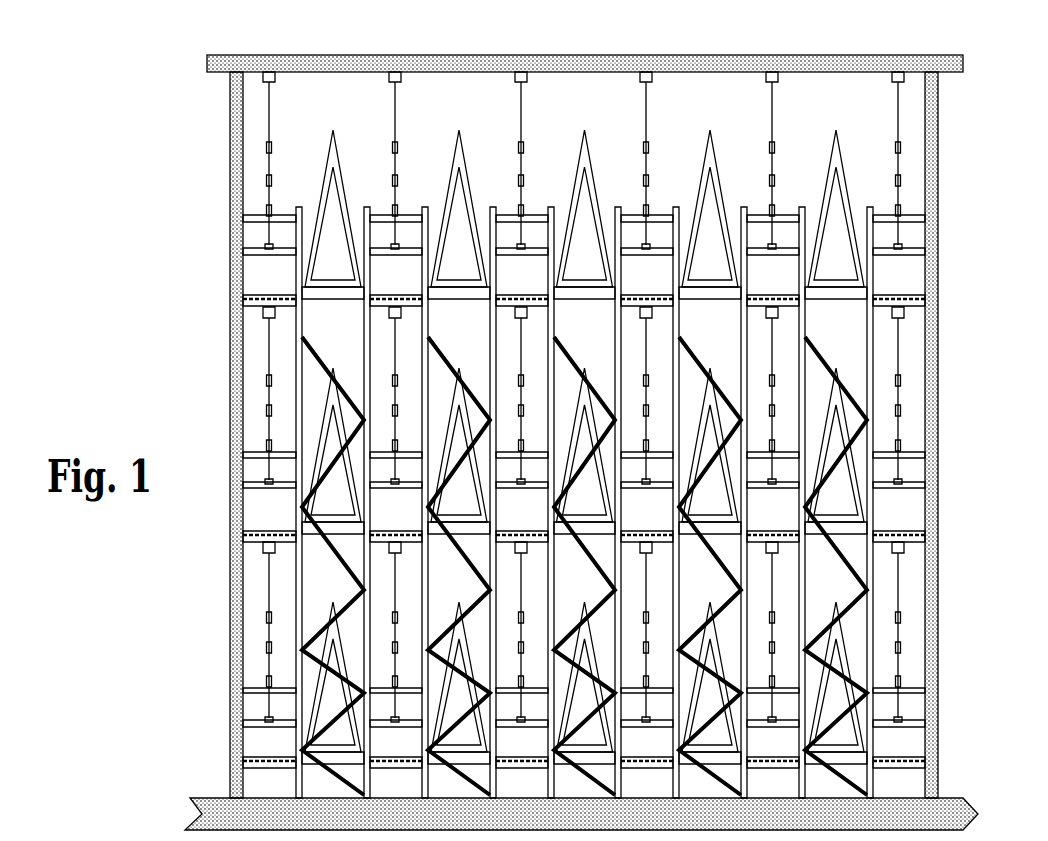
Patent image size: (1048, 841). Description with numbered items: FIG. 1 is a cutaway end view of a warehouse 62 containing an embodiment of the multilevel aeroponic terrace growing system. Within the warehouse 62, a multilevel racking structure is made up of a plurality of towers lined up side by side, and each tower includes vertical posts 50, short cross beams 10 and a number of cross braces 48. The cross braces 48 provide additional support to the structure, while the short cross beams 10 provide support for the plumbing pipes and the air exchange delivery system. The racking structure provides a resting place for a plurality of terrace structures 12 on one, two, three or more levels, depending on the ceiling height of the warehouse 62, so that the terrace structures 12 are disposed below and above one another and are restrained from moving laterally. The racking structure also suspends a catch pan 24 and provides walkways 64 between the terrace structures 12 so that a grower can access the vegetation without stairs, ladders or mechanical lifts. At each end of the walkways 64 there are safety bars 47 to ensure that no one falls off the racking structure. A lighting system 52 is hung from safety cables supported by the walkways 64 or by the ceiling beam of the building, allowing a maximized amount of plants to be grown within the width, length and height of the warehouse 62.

The short cross beam 10 is at (342, 290).
The terrace structure 12 is at (327, 157).
The catch pan 24 is at (328, 297).
The safety bar 47 is at (910, 717).
The cross brace 48 is at (332, 463).
The post 50 is at (302, 366).
The lighting system 52 is at (644, 143).
The warehouse 62 is at (230, 119).
The walkway 64 is at (908, 299).